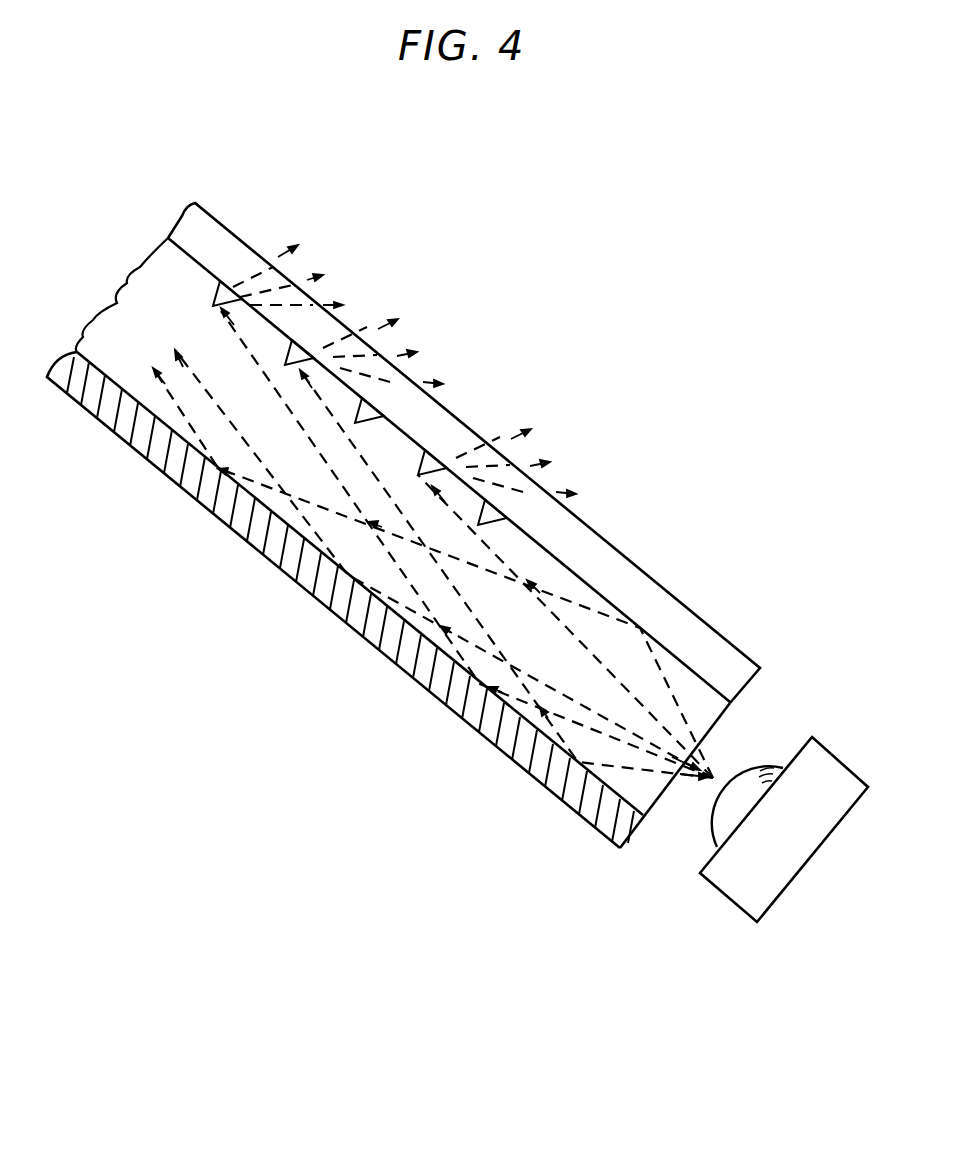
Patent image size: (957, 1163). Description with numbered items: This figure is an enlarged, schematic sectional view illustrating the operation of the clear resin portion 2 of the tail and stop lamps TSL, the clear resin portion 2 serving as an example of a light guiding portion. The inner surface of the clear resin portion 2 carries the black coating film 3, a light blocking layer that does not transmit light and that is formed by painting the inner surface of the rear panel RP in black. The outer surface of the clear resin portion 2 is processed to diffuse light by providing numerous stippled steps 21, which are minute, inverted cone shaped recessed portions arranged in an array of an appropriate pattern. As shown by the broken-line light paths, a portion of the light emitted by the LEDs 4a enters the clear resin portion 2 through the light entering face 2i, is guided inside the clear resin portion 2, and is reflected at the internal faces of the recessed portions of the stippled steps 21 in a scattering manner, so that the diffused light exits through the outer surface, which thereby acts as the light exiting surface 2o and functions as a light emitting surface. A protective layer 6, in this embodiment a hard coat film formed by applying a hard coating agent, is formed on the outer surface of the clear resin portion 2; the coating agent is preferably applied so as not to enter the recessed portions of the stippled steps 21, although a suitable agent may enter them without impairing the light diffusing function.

The clear resin portion 2 is at (143, 300).
The light exiting surface 2o is at (423, 441).
The light entering face 2i is at (716, 730).
The stippled steps 21 is at (232, 287).
The black coating film 3 is at (316, 589).
The LEDs 4a is at (722, 887).
The protective layer 6 is at (638, 595).
The rear panel RP is at (363, 184).
The tail and stop lamps TSL is at (405, 282).